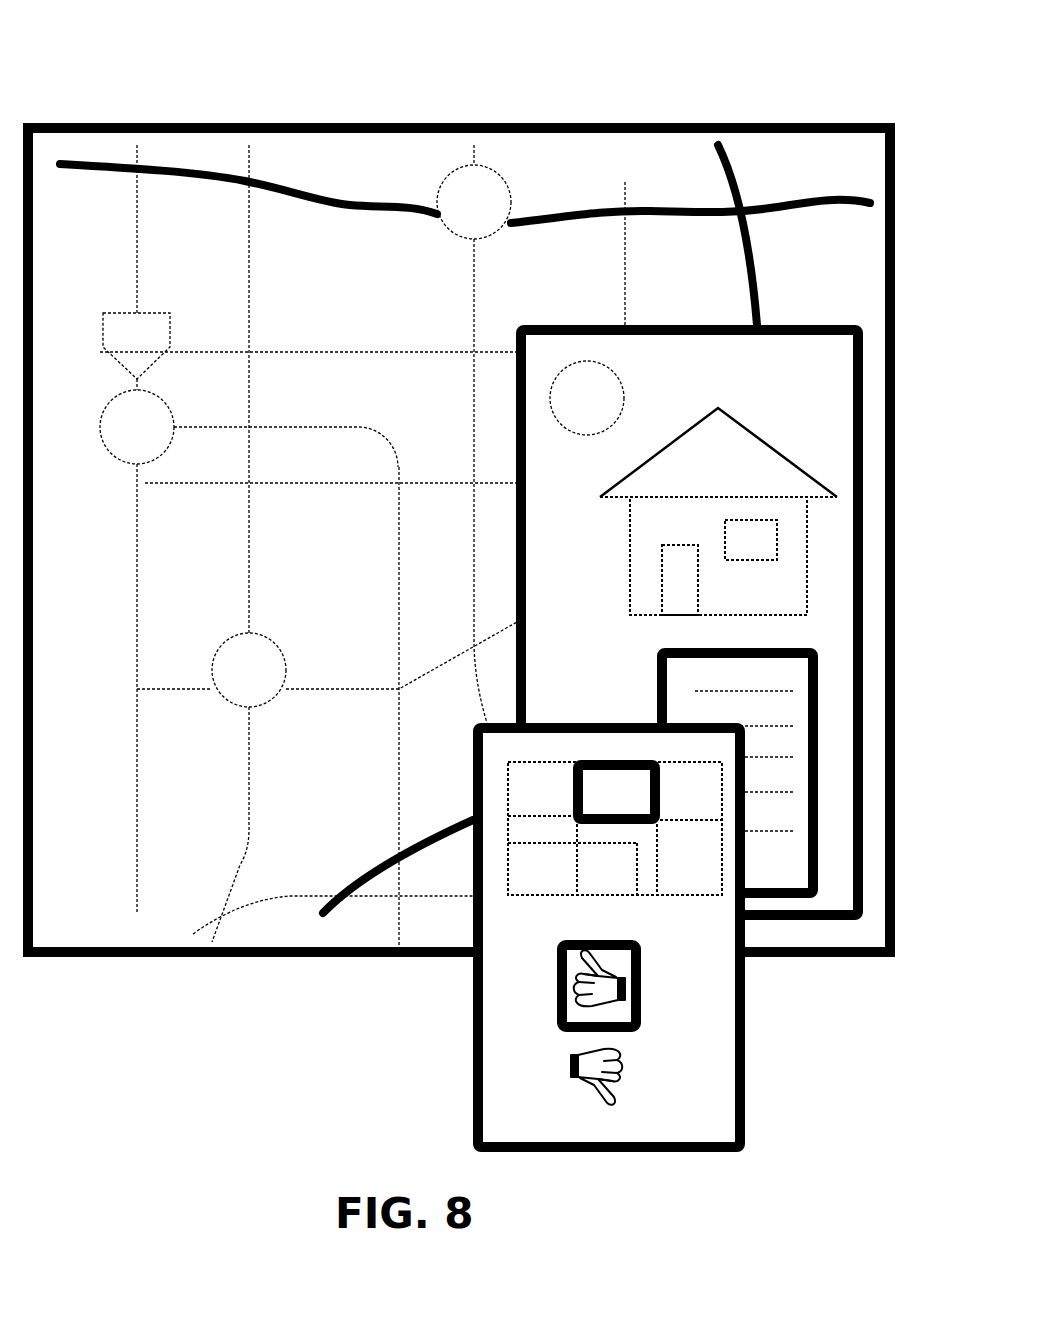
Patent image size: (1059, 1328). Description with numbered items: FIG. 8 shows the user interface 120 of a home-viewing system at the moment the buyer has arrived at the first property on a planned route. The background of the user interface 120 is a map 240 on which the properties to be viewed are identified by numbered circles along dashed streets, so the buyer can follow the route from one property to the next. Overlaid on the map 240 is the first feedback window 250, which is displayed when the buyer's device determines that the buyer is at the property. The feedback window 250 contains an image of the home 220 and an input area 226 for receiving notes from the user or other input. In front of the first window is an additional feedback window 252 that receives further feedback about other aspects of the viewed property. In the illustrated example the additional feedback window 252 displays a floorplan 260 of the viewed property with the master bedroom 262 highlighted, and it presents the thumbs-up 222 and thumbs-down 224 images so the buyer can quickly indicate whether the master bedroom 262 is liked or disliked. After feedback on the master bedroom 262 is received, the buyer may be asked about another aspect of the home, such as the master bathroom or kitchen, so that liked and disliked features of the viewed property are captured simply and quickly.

The user interface 120 is at (248, 56).
The map 240 is at (653, 122).
The home 220 is at (737, 435).
The input area 226 is at (705, 670).
The feedback window 250 is at (713, 670).
The additional feedback window 252 is at (574, 976).
The floorplan 260 is at (618, 868).
The master bedroom 262 is at (593, 828).
The thumbs-up image 222 is at (555, 993).
The thumbs-down image 224 is at (625, 1074).